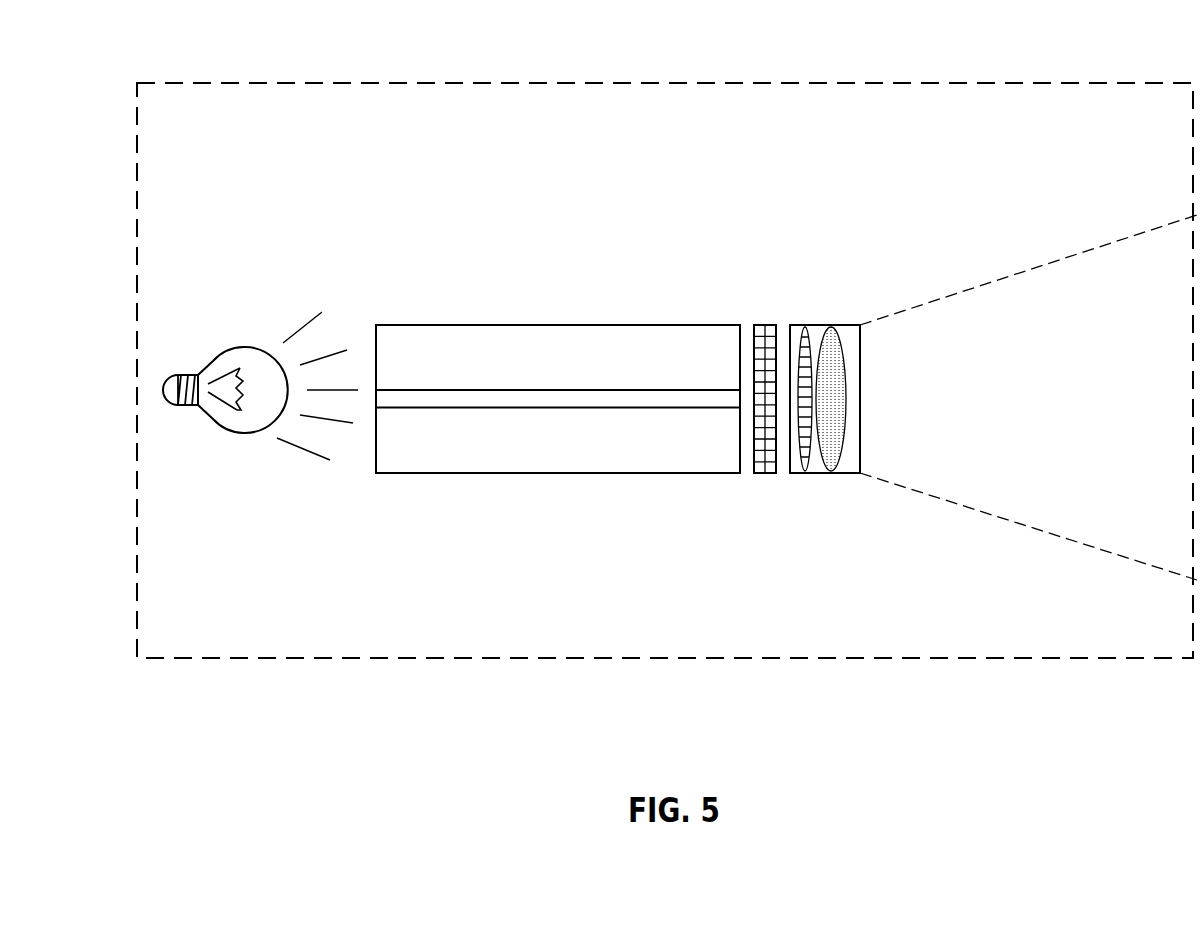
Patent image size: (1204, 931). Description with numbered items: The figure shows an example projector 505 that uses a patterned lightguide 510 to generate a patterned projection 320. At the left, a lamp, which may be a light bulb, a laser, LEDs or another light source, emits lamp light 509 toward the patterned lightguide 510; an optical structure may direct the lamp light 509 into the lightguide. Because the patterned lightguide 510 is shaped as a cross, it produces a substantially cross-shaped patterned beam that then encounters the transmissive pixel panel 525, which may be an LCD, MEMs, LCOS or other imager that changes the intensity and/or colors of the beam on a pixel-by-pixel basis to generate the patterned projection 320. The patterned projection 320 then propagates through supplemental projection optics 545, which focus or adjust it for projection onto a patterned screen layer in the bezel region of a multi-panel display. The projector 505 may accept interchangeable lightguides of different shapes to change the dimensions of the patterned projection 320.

The projector 505 is at (1027, 83).
The lamp light 509 is at (325, 298).
The patterned lightguide 510 is at (457, 325).
The transmissive pixel panel 525 is at (763, 325).
The supplemental projection optics 545 is at (822, 473).
The patterned projection 320 is at (1075, 255).